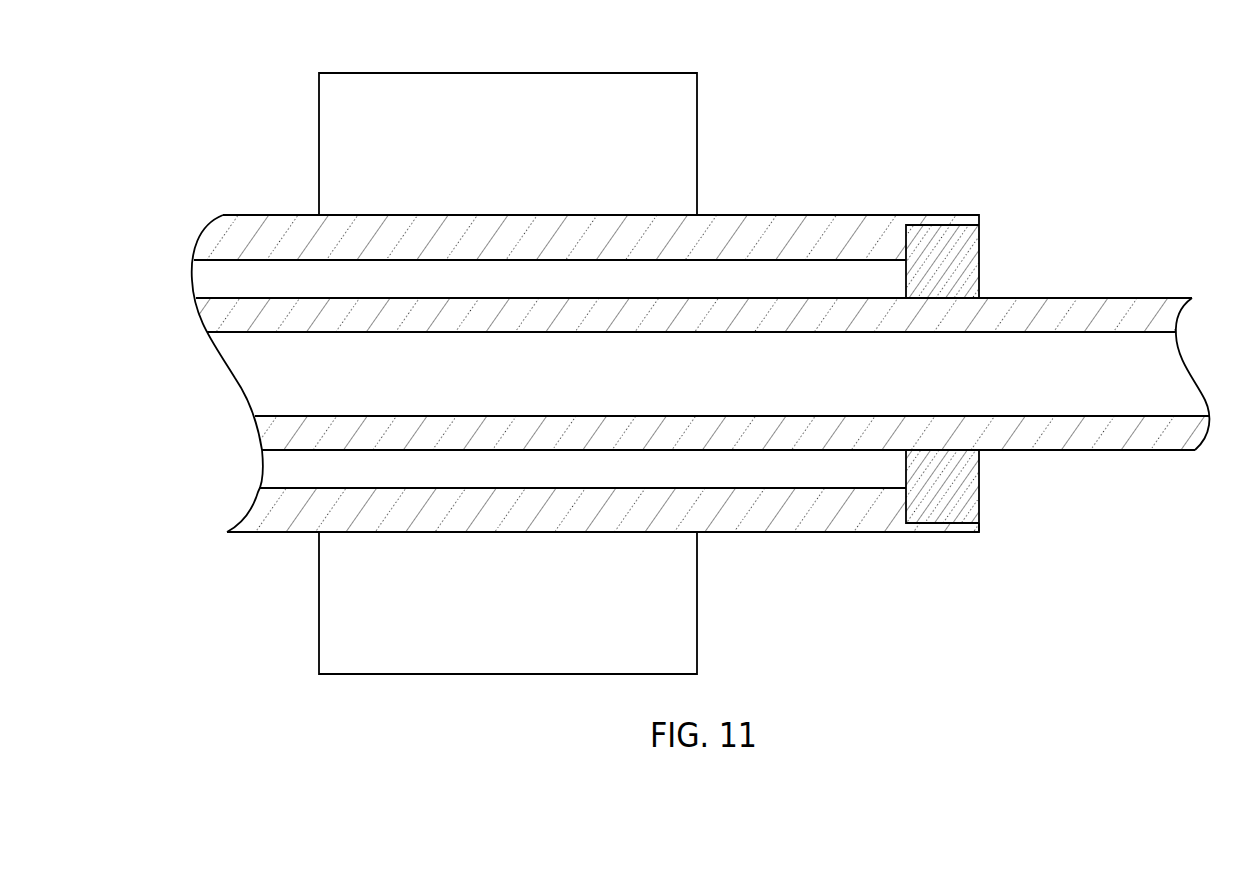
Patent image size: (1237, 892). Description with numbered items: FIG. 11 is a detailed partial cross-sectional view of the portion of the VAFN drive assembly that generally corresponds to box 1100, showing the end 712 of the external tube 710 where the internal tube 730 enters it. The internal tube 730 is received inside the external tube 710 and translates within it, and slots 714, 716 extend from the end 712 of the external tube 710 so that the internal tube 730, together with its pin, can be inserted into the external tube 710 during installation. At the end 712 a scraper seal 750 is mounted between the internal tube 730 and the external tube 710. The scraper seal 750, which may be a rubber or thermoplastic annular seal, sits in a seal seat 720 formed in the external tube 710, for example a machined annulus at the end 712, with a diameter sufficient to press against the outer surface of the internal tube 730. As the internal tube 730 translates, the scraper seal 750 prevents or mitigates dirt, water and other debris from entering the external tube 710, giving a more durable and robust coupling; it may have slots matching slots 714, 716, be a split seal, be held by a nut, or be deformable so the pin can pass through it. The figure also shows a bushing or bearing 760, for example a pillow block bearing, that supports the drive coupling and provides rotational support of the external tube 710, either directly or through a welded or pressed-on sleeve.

The box 1100 is at (256, 139).
The bearing 760 is at (505, 73).
The external tube 710 is at (772, 224).
The end 712 is at (988, 291).
The slot 714 is at (200, 278).
The slot 716 is at (267, 472).
The seal seat 720 is at (906, 512).
The internal tube 730 is at (1122, 442).
The scraper seal 750 is at (980, 496).